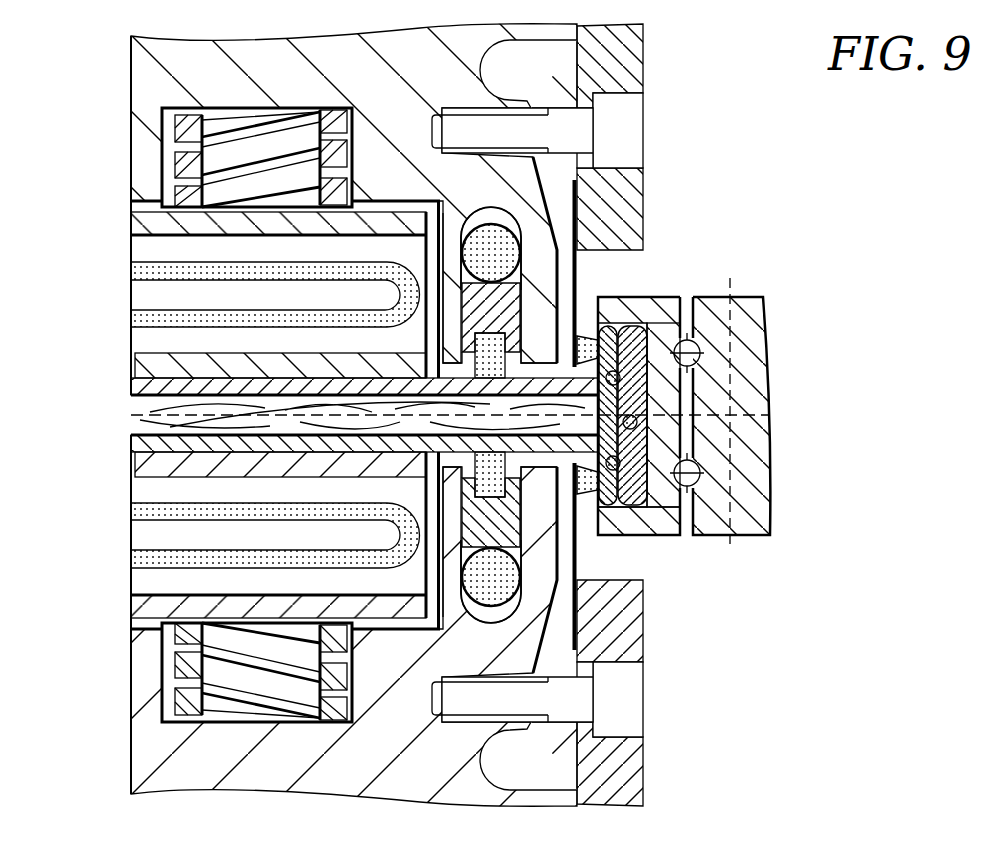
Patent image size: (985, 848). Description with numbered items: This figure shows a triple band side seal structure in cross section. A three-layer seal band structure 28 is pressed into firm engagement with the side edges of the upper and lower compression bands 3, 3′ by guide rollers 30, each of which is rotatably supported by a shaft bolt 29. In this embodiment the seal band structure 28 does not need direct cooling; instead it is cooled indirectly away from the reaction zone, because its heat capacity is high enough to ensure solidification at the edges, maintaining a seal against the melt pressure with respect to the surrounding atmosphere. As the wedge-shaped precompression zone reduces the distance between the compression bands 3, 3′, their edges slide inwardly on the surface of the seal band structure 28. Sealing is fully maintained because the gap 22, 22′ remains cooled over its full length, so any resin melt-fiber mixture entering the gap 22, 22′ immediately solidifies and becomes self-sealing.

The compression band 3 is at (578, 302).
The compression band 3′ is at (574, 485).
The gap 22 is at (614, 370).
The gap 22′ is at (636, 470).
The seal band structure 28 is at (623, 407).
The shaft bolt 29 is at (750, 442).
The guide roller 30 is at (663, 442).